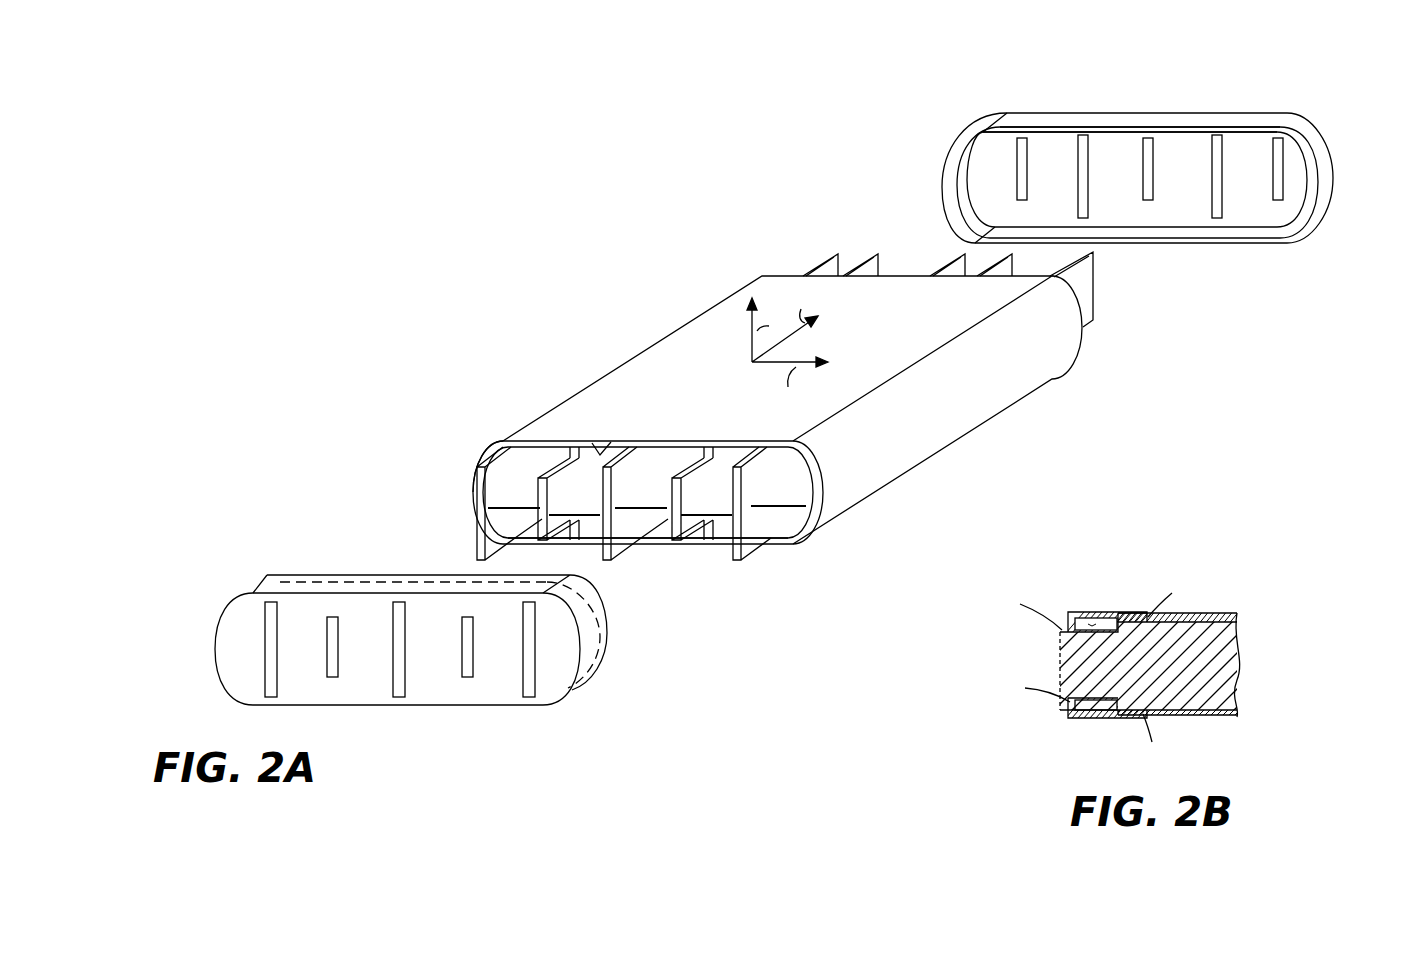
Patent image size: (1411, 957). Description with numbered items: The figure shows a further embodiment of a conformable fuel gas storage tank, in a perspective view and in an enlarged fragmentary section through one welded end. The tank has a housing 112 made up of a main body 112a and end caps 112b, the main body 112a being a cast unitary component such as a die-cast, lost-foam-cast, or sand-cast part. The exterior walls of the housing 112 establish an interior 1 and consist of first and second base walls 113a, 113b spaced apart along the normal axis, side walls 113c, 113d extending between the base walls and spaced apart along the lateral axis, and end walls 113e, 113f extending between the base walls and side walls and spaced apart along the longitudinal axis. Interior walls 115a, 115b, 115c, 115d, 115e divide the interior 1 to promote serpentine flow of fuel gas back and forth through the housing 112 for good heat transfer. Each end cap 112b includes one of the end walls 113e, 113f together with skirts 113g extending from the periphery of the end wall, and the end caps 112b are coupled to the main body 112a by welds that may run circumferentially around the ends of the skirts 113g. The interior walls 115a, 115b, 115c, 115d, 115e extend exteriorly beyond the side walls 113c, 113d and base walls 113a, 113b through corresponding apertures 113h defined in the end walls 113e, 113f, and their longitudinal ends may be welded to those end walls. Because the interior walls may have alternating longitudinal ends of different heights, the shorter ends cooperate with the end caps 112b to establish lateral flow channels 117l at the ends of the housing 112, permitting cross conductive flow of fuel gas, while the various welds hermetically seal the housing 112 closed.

In FIG. 2A, the housing 112 is at (751, 435).
In FIG. 2B, the housing 112 is at (1175, 643).
In FIG. 2A, the main body 112a is at (592, 377).
In FIG. 2A, the end caps 112b is at (747, 432).
In FIG. 2B, the end caps 112b is at (1089, 581).
In FIG. 2A, the first base wall 113a is at (650, 546).
In FIG. 2B, the first base wall 113a is at (1173, 713).
In FIG. 2A, the second base wall 113b is at (745, 305).
In FIG. 2B, the second base wall 113b is at (1210, 616).
In FIG. 2A, the side wall 113c is at (1030, 372).
In FIG. 2A, the side wall 113d is at (476, 493).
In FIG. 2A, the end wall 113e is at (210, 627).
In FIG. 2B, the end wall 113e is at (1072, 708).
In FIG. 2A, the end wall 113f is at (1118, 150).
In FIG. 2A, the skirts 113g is at (1068, 120).
In FIG. 2B, the skirts 113g is at (1125, 615).
In FIG. 2A, the apertures 113h is at (1278, 186).
In FIG. 2A, the interior wall 115a is at (782, 495).
In FIG. 2A, the interior wall 115b is at (712, 504).
In FIG. 2B, the interior wall 115b is at (1218, 655).
In FIG. 2A, the interior wall 115c is at (645, 497).
In FIG. 2A, the interior wall 115d is at (580, 504).
In FIG. 2A, the interior wall 115e is at (519, 497).
In FIG. 2B, the lateral flow channels 117l is at (1091, 622).
In FIG. 2A, the interior 1 is at (611, 442).